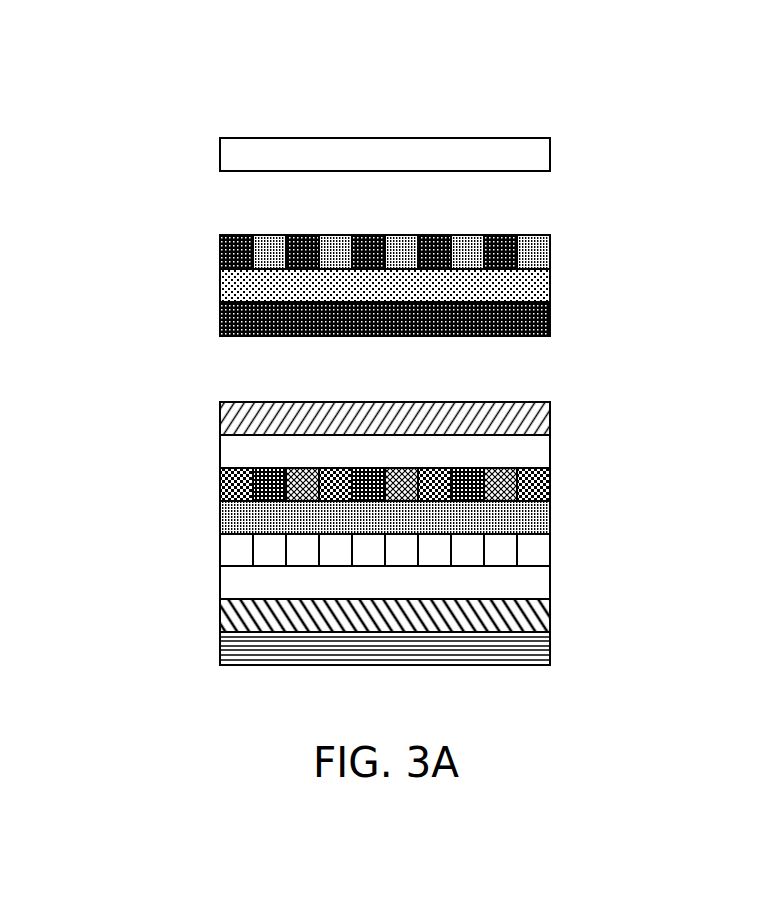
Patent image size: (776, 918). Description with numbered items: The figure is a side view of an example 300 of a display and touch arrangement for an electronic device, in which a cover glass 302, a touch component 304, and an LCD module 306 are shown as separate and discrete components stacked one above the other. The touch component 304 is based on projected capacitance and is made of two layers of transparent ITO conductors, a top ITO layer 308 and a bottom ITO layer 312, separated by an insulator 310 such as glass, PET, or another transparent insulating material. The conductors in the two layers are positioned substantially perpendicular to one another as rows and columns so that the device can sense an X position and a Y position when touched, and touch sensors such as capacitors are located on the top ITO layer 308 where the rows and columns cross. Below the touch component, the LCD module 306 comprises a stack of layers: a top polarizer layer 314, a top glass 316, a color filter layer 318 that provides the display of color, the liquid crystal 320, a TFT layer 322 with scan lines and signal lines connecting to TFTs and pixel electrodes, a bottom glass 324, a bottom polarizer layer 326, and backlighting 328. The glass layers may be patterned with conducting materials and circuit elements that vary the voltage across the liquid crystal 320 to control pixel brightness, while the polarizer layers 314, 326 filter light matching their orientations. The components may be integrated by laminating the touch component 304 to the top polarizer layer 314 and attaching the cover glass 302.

The example 300 is at (402, 96).
The cover glass 302 is at (183, 150).
The touch component 304 is at (183, 297).
The LCD module 306 is at (183, 562).
The top ITO layer 308 is at (436, 252).
The insulator 310 is at (460, 285).
The bottom ITO layer 312 is at (436, 319).
The polarizer layer 314 is at (461, 418).
The top glass 316 is at (463, 451).
The color filter layer 318 is at (472, 484).
The liquid crystal 320 is at (483, 517).
The TFT layer 322 is at (440, 550).
The bottom glass 324 is at (468, 582).
The polarizer layer 326 is at (461, 615).
The backlighting 328 is at (461, 648).